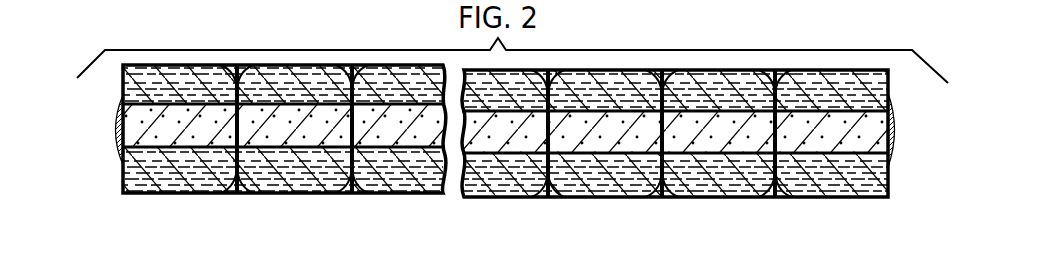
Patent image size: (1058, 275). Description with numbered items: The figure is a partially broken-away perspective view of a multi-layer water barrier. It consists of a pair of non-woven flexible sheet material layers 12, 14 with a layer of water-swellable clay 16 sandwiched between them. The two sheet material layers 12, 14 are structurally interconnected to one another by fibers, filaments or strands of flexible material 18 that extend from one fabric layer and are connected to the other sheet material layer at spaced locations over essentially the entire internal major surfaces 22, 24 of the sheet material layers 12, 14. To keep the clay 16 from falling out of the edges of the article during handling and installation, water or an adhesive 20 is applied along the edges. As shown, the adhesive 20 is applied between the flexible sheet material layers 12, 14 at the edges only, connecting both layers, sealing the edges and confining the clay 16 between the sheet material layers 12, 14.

The non-woven flexible sheet material layer 12 is at (624, 88).
The non-woven flexible sheet material layer 14 is at (573, 196).
The layer of water-swellable clay 16 is at (645, 140).
The fibers, filaments or strands of flexible material 18 is at (317, 198).
The adhesive 20 is at (110, 133).
The internal major surface 22 is at (742, 124).
The internal major surface 24 is at (756, 150).